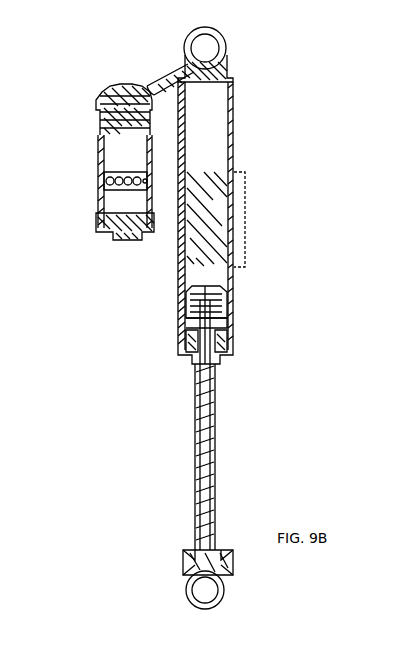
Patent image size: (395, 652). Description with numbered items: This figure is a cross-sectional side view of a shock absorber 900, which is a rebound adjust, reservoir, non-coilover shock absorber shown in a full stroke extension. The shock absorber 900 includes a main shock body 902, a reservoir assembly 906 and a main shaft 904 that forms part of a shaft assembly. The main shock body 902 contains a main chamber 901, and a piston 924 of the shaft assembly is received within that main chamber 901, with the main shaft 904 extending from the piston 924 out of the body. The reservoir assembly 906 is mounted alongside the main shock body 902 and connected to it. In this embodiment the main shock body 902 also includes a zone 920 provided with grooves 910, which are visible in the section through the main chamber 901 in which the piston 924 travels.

The shock absorber 900 is at (294, 123).
The main chamber 901 is at (231, 113).
The main shock body 902 is at (234, 153).
The main shaft 904 is at (216, 448).
The reservoir assembly 906 is at (100, 157).
The grooves 910 is at (228, 246).
The zone 920 is at (245, 220).
The piston 924 is at (231, 305).